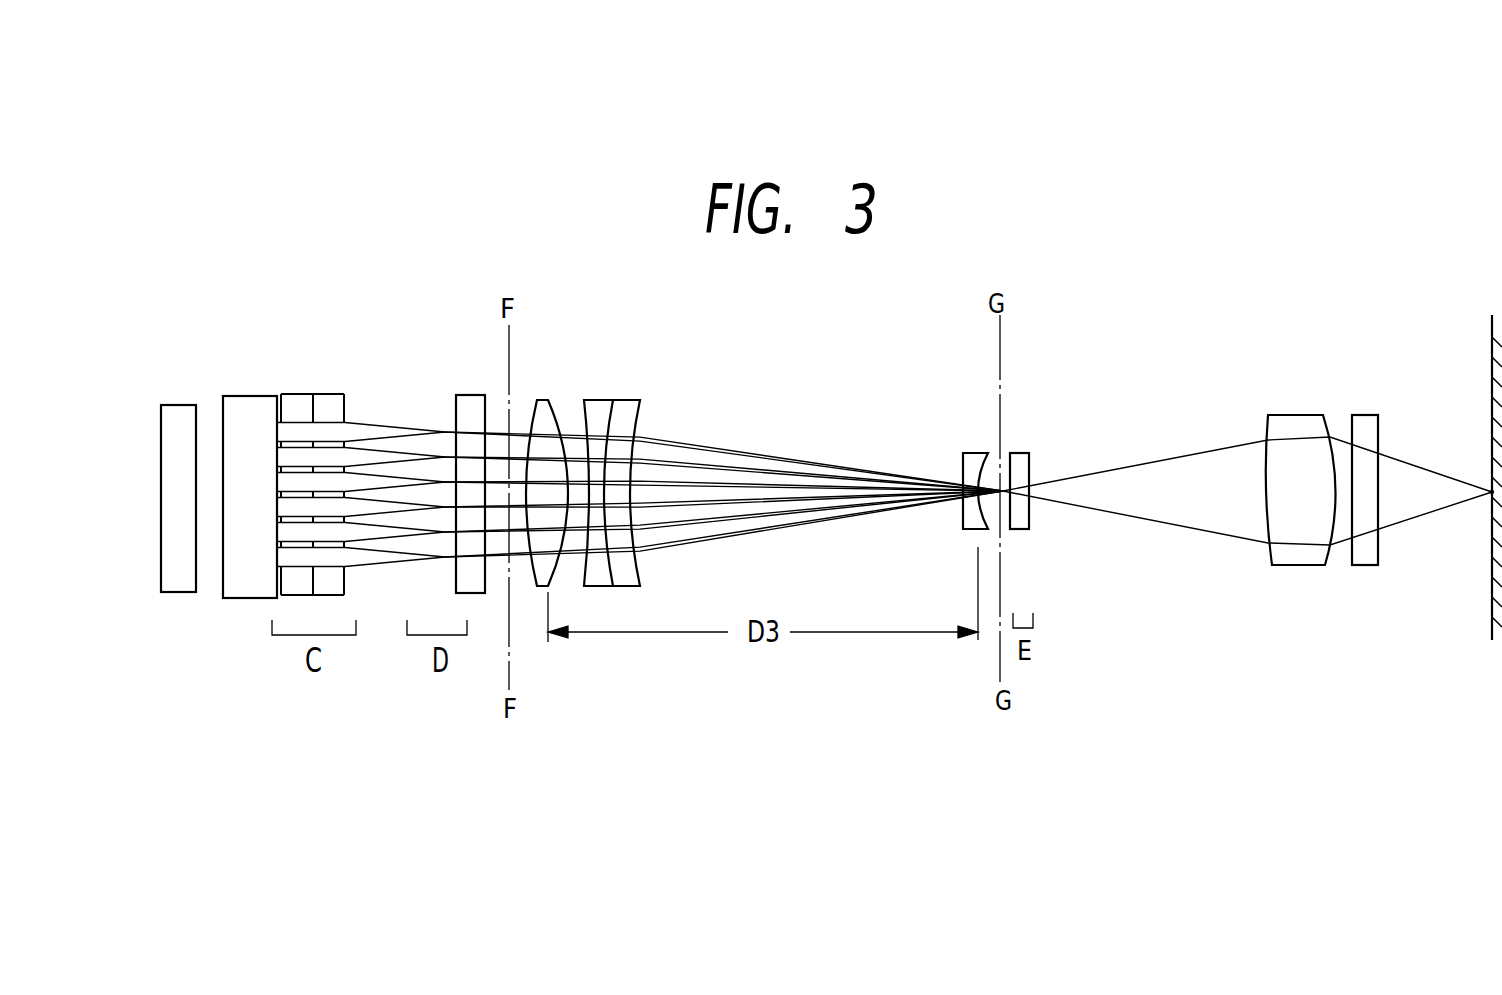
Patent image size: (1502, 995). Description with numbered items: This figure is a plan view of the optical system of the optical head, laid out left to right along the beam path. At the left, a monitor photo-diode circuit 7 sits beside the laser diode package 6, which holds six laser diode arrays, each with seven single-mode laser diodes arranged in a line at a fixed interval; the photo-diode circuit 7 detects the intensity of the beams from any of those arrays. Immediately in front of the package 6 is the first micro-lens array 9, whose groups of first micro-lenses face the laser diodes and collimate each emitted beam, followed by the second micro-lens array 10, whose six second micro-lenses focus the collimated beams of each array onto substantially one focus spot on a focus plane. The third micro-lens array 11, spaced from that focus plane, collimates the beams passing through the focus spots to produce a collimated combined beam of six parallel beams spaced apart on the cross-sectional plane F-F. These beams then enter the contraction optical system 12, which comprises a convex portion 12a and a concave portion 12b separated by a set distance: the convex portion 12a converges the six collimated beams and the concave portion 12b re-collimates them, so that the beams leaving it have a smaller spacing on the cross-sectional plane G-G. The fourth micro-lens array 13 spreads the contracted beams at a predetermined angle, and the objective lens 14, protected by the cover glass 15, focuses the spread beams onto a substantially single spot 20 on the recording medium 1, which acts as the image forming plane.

The recording medium 1 is at (1492, 337).
The laser diode package 6 is at (242, 415).
The monitor photo-diode circuit 7 is at (171, 420).
The first micro-lens array 9 is at (297, 407).
The second micro-lens array 10 is at (330, 407).
The third micro-lens array 11 is at (470, 405).
The contraction optical system 12 is at (983, 368).
The convex portion 12a is at (650, 384).
The concave portion 12b is at (972, 453).
The fourth micro-lens array 13 is at (1022, 460).
The objective lens 14 is at (1291, 422).
The cover glass 15 is at (1366, 422).
The substantially single spot 20 is at (1492, 493).